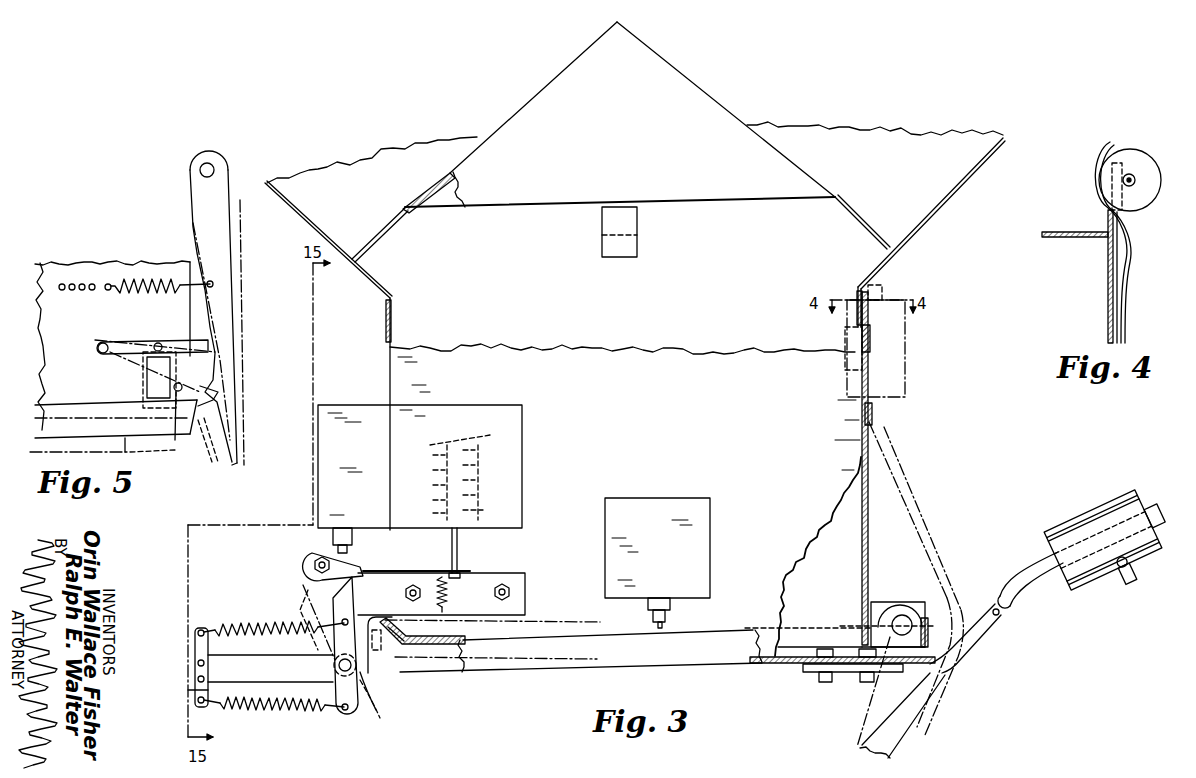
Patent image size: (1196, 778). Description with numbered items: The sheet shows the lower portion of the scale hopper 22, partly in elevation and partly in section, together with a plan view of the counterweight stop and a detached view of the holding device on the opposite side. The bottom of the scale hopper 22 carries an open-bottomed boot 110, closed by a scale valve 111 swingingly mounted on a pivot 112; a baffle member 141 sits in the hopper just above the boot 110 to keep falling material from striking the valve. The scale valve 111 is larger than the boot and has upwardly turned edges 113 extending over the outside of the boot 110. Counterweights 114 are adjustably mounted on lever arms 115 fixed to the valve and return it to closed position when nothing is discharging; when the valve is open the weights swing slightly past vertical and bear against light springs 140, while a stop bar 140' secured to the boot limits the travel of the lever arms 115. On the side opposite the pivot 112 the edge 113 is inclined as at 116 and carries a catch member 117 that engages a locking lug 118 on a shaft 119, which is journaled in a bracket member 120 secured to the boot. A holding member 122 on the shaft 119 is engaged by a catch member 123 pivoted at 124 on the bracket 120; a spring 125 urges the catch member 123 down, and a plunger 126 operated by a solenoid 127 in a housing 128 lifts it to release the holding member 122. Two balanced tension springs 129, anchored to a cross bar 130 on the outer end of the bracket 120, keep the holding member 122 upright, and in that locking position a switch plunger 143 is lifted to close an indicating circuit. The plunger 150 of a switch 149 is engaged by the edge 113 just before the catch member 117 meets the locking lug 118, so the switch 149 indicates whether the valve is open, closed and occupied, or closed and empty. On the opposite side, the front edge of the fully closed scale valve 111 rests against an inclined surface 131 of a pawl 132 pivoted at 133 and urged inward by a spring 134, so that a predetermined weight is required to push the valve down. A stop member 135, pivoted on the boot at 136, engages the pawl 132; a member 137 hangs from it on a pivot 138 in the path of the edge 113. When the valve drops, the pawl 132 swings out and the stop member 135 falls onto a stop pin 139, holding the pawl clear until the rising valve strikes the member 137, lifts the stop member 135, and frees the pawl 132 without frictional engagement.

In FIG. 3, the scale hopper 22 is at (973, 137).
In FIG. 3, the baffle member 141 is at (506, 129).
In FIG. 3, the boot 110 is at (850, 452).
In FIG. 4, the boot 110 is at (1109, 270).
In FIG. 5, the boot 110 is at (68, 265).
In FIG. 3, the springs 140 is at (902, 341).
In FIG. 4, the springs 140 is at (1096, 236).
In FIG. 3, the stop bar 140' is at (901, 414).
In FIG. 4, the stop bar 140' is at (1141, 277).
In FIG. 3, the counterweights 114 is at (1062, 533).
In FIG. 4, the counterweights 114 is at (1144, 168).
In FIG. 3, the lever arms 115 is at (950, 581).
In FIG. 4, the lever arms 115 is at (1127, 174).
In FIG. 3, the pivot 112 is at (896, 612).
In FIG. 3, the upwardly turned edges 113 is at (726, 635).
In FIG. 5, the upwardly turned edges 113 is at (68, 405).
In FIG. 3, the scale valve 111 is at (462, 672).
In FIG. 5, the scale valve 111 is at (128, 449).
In FIG. 3, the inclined edge 116 is at (425, 670).
In FIG. 5, the inclined edge 116 is at (212, 452).
In FIG. 3, the catch member 117 is at (380, 624).
In FIG. 3, the locking lug 118 is at (386, 706).
In FIG. 3, the shaft 119 is at (338, 665).
In FIG. 3, the bracket member 120 is at (490, 573).
In FIG. 3, the holding member 122 is at (306, 589).
In FIG. 3, the catch member 123 is at (366, 571).
In FIG. 3, the pivot 124 is at (312, 565).
In FIG. 3, the spring 125 is at (449, 596).
In FIG. 3, the plunger 126 is at (452, 556).
In FIG. 3, the solenoid 127 is at (474, 478).
In FIG. 3, the housing 128 is at (505, 411).
In FIG. 3, the tension springs 129 is at (228, 629).
In FIG. 3, the cross bar 130 is at (178, 689).
In FIG. 5, the inclined surface 131 is at (218, 392).
In FIG. 5, the pawl 132 is at (212, 240).
In FIG. 5, the pivot 133 is at (200, 170).
In FIG. 5, the spring 134 is at (140, 282).
In FIG. 5, the stop member 135 is at (133, 343).
In FIG. 5, the pivot 136 is at (98, 348).
In FIG. 5, the member 137 is at (147, 386).
In FIG. 5, the pivot 138 is at (162, 343).
In FIG. 5, the stop pin 139 is at (175, 440).
In FIG. 3, the switch plunger 143 is at (318, 554).
In FIG. 3, the switch 149 is at (640, 506).
In FIG. 3, the plunger 150 is at (666, 622).